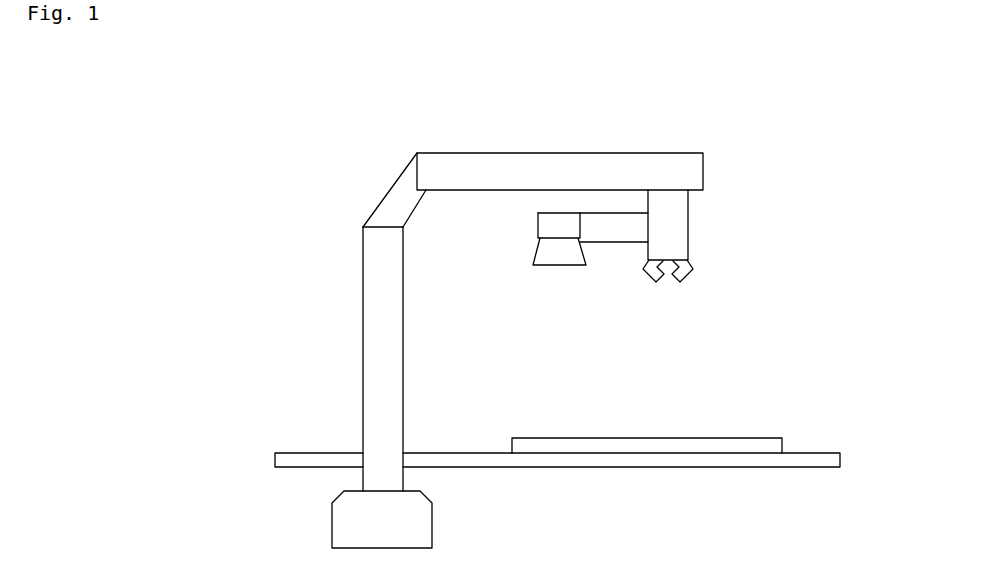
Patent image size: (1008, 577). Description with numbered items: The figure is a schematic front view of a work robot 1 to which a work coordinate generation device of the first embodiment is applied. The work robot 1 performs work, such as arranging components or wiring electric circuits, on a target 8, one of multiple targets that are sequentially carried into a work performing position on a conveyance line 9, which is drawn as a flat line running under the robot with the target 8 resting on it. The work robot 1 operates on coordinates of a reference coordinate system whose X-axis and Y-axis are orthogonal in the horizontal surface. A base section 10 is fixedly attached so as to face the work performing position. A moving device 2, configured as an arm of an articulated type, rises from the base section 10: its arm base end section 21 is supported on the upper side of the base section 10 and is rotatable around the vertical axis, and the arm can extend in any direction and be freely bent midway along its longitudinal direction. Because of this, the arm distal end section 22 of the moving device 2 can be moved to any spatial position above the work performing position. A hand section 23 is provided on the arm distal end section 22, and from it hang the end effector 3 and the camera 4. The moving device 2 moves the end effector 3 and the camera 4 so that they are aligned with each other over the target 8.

The work robot 1 is at (783, 138).
The moving device 2 is at (375, 325).
The arm base end section 21 is at (372, 478).
The arm distal end section 22 is at (681, 162).
The hand section 23 is at (678, 228).
The end effector 3 is at (690, 275).
The camera 4 is at (566, 268).
The target 8 is at (683, 438).
The conveyance line 9 is at (660, 467).
The base section 10 is at (355, 523).